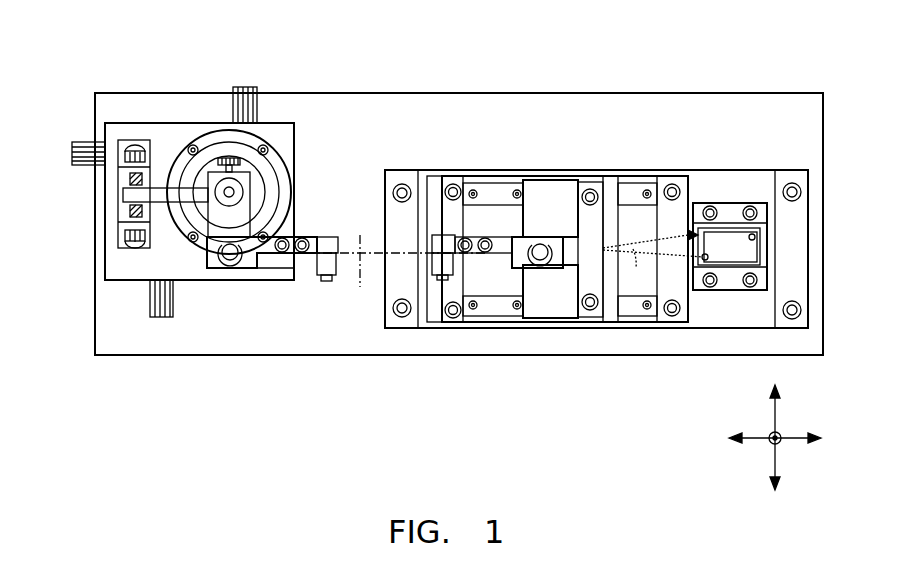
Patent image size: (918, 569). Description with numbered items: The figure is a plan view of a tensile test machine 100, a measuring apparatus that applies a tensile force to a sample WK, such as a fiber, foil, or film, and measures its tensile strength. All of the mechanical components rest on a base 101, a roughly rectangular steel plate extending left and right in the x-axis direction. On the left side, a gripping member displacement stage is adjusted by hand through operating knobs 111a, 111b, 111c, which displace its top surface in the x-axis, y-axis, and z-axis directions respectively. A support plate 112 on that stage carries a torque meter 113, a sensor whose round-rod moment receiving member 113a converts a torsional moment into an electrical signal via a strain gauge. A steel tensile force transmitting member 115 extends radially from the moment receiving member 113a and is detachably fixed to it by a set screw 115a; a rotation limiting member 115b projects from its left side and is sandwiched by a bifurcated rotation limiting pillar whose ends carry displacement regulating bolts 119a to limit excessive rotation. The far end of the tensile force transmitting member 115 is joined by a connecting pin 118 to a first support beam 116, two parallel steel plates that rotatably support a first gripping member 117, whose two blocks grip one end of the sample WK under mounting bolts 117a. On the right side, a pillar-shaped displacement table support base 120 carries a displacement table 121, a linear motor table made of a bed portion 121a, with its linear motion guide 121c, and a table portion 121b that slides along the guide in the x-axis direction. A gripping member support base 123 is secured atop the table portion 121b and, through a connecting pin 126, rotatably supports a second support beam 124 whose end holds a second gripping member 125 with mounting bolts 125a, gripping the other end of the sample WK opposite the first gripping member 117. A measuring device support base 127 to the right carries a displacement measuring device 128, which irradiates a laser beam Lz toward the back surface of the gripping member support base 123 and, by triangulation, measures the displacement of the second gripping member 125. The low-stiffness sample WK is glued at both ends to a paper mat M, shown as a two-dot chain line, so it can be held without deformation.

The tensile test machine 100 is at (503, 37).
The base 101 is at (728, 93).
The operating knob 111a is at (163, 318).
The operating knob 111b is at (84, 141).
The operating knob 111c is at (237, 86).
The support plate 112 is at (118, 282).
The torque meter 113 is at (260, 137).
The moment receiving member 113a is at (241, 183).
The tensile force transmitting member 115 is at (176, 221).
The set screw 115a is at (228, 158).
The rotation limiting member 115b is at (160, 187).
The first support beam 116 is at (272, 256).
The first gripping member 117 is at (316, 268).
The mounting bolts 117a is at (328, 282).
The connecting pin 118 is at (232, 266).
The displacement regulating bolt 119a is at (128, 140).
The displacement table support base 120 is at (686, 170).
The displacement table 121 is at (603, 100).
The bed portion 121a is at (487, 183).
The table portion 121b is at (532, 180).
The linear motion guide 121c is at (508, 183).
The gripping member support base 123 is at (590, 322).
The second support beam 124 is at (494, 254).
The second gripping member 125 is at (426, 236).
The mounting bolts 125a is at (437, 281).
The connecting pin 126 is at (540, 265).
The measuring device support base 127 is at (732, 228).
The displacement measuring device 128 is at (728, 266).
The sample WK is at (356, 266).
The mat M is at (360, 250).
The laser beam Lz is at (653, 261).